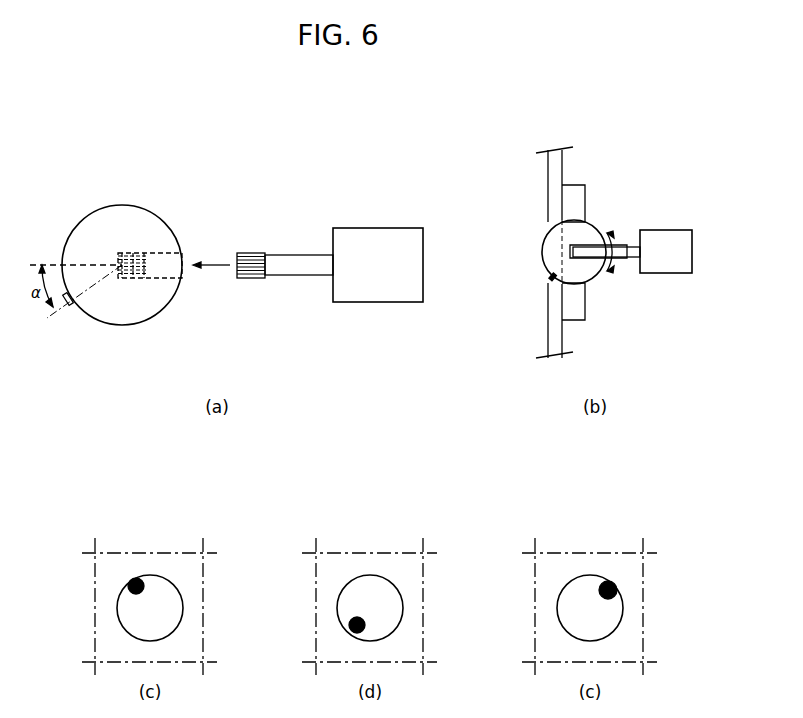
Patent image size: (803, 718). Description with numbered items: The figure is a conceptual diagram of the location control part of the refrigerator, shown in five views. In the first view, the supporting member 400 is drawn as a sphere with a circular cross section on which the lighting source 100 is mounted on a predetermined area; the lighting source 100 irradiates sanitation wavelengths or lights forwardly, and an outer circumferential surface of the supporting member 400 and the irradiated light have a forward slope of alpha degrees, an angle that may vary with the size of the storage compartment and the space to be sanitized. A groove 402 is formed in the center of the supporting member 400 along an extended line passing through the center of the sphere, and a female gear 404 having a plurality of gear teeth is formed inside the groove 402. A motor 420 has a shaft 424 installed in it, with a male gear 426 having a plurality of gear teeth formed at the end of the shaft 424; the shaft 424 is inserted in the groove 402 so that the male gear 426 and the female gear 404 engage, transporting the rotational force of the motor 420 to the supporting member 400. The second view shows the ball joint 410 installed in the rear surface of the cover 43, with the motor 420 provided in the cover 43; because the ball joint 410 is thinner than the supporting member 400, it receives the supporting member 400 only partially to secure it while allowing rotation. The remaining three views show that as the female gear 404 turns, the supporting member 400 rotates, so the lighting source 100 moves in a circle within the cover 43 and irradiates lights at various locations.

The cover 43 is at (558, 163).
The lighting source 100 is at (72, 307).
The supporting member 400 is at (92, 222).
The groove 402 is at (158, 257).
The female gear 404 is at (130, 250).
The ball joint 410 is at (583, 303).
The motor 420 is at (377, 233).
The shaft 424 is at (632, 248).
The male gear 426 is at (250, 252).